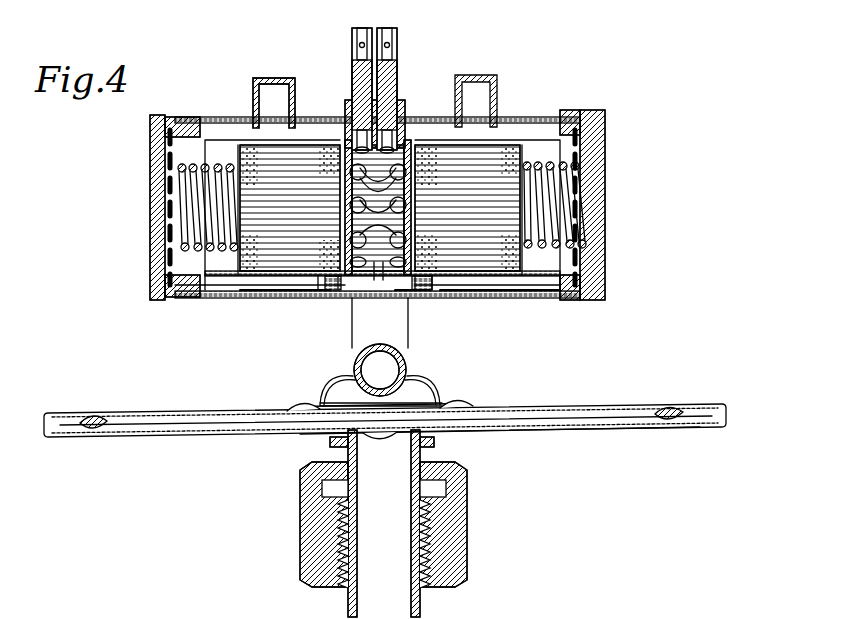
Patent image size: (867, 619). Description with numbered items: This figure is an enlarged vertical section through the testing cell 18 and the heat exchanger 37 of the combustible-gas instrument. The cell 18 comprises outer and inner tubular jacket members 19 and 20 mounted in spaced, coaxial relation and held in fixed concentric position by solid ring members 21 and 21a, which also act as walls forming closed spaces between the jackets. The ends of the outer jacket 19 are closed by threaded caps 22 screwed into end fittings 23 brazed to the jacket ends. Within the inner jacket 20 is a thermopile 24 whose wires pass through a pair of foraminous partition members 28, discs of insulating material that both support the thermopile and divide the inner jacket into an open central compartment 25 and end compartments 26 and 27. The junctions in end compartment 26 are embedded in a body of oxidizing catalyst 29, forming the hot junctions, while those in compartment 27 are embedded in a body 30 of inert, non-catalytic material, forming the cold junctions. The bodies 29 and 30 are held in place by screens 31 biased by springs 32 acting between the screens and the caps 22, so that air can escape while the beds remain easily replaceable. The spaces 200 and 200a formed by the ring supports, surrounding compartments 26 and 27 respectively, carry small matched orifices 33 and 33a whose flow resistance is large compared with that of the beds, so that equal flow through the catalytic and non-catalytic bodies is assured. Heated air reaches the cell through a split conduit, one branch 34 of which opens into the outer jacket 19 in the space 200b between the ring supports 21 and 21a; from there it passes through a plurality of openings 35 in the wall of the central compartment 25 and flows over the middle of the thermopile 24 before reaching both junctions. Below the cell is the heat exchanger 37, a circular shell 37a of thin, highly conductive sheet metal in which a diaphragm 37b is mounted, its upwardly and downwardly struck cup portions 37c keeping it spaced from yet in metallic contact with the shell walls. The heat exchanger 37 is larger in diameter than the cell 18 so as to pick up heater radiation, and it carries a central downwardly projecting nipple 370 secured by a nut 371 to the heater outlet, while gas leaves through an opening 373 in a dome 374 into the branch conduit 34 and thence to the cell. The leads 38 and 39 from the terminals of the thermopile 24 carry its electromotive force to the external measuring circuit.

The testing cell 18 is at (270, 297).
The outer jacket member 19 is at (195, 120).
The inner jacket member 20 is at (215, 290).
The ring member 21 is at (310, 282).
The ring member 21a is at (452, 285).
The threaded cap 22 is at (605, 122).
The end fitting 23 is at (570, 115).
The thermopile 24 is at (280, 165).
The central compartment 25 is at (372, 285).
The end compartment 26 is at (500, 197).
The end compartment 27 is at (272, 197).
The partition member 28 is at (338, 278).
The body of oxidizing catalyst 29 is at (520, 280).
The body of non-catalytic material 30 is at (245, 272).
The screen 31 is at (520, 185).
The spring 32 is at (585, 262).
The orifice 33 is at (480, 75).
The orifice 33a is at (255, 78).
The branch conduit 34 is at (408, 358).
The openings 35 is at (378, 210).
The heat exchanger 37 is at (185, 441).
The circular shell 37a is at (520, 405).
The diaphragm 37b is at (520, 420).
The cup portions 37c is at (300, 409).
The lead 38 is at (352, 83).
The lead 39 is at (397, 60).
The space 200 is at (493, 276).
The space 200a is at (252, 298).
The space 200b is at (408, 292).
The nipple 370 is at (420, 600).
The nut 371 is at (455, 530).
The opening 373 is at (430, 378).
The dome 374 is at (450, 392).